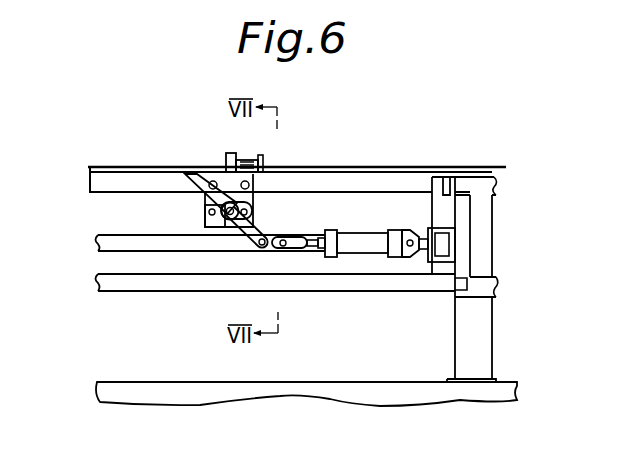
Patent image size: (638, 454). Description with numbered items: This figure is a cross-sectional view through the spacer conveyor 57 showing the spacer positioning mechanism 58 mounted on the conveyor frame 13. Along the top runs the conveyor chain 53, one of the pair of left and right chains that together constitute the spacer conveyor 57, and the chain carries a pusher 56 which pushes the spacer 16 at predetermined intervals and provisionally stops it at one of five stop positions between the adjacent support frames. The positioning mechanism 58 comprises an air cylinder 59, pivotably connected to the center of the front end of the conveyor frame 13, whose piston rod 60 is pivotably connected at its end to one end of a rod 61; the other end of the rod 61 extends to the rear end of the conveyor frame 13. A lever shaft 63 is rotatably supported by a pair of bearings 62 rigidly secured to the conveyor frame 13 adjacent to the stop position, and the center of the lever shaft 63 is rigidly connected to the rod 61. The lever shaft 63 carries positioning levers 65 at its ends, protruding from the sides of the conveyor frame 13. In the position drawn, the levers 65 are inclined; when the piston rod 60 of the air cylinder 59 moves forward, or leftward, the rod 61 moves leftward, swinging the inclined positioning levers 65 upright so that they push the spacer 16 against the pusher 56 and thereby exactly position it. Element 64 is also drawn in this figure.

The conveyor frame 13 is at (141, 167).
The spacer 16 is at (253, 158).
The conveyor chain 53 is at (421, 168).
The pusher 56 is at (266, 156).
The spacer conveyor 57 is at (366, 157).
The positioning mechanism 58 is at (350, 265).
The air cylinder 59 is at (370, 258).
The piston rod 60 is at (302, 251).
The rod 61 is at (152, 252).
The bearing 62 is at (206, 224).
The lever shaft 63 is at (229, 221).
The lower lever arm 64 is at (251, 236).
The positioning lever 65 is at (236, 238).